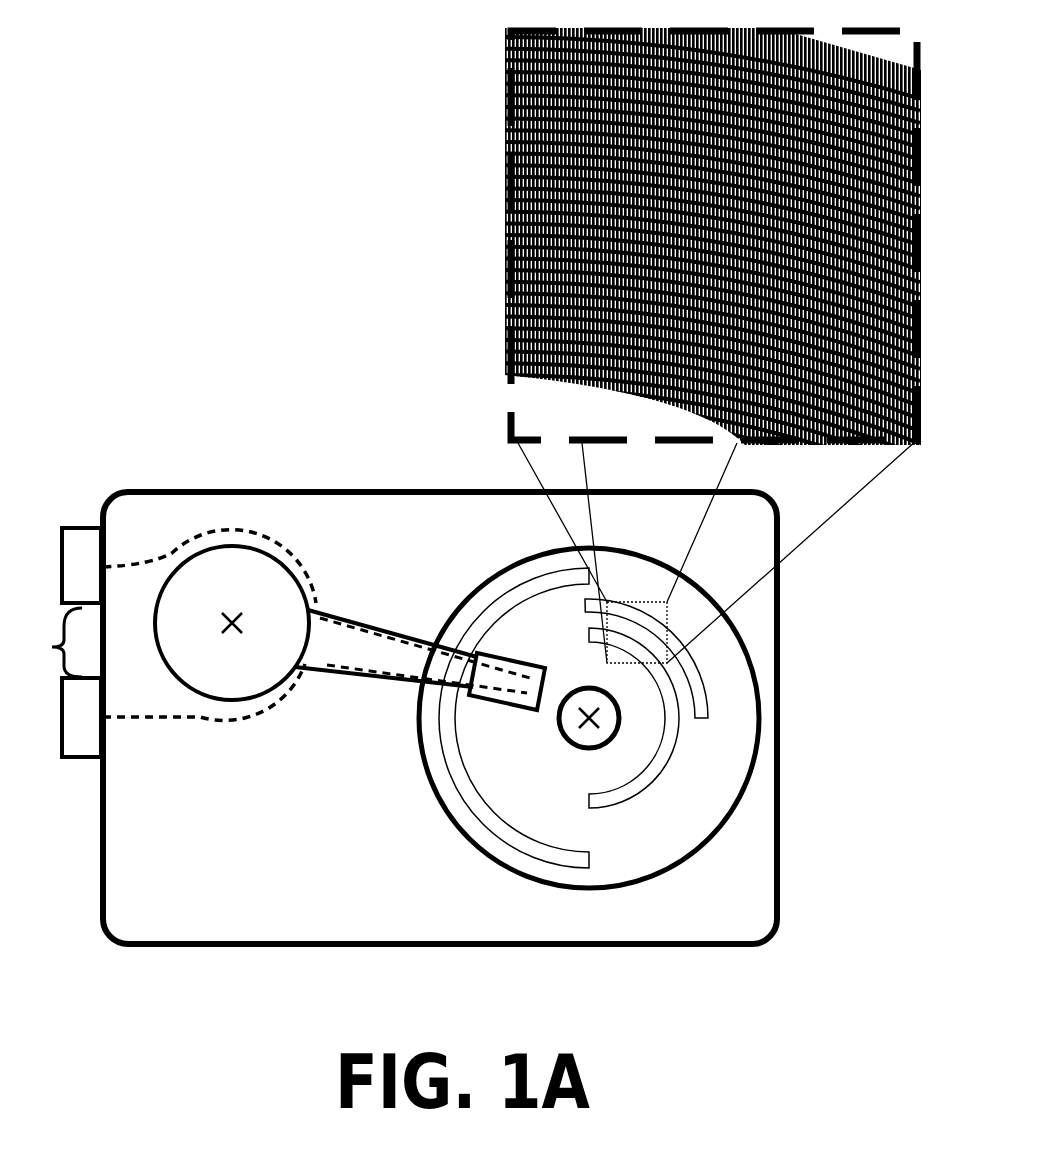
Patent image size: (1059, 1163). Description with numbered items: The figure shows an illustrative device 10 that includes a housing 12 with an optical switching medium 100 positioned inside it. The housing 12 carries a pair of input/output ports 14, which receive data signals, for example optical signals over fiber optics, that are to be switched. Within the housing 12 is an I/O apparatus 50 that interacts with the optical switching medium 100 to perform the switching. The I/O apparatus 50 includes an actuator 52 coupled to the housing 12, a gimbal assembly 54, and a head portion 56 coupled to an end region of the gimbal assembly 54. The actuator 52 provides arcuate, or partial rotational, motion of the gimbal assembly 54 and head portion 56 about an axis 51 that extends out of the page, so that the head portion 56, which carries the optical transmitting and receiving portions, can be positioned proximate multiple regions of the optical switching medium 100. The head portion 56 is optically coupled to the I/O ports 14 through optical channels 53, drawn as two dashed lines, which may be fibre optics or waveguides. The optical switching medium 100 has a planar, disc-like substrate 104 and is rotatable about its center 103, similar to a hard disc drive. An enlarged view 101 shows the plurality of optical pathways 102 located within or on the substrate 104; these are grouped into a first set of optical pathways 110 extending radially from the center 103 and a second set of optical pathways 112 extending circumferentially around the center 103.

The device 10 is at (98, 440).
The housing 12 is at (212, 490).
The input/output (I/O) ports 14 is at (52, 647).
The I/O apparatus 50 is at (397, 760).
The axis 51 is at (232, 627).
The actuator 52 is at (252, 547).
The optical channels 53 is at (363, 640).
The gimbal assembly 54 is at (362, 637).
The head portion 56 is at (497, 660).
The optical switching medium 100 is at (712, 870).
The enlarged view 101 is at (510, 128).
The optical pathways 102 is at (506, 50).
The center 103 is at (613, 713).
The substrate 104 is at (633, 882).
The first set of optical pathways 110 is at (567, 263).
The second set of optical pathways 112 is at (570, 218).